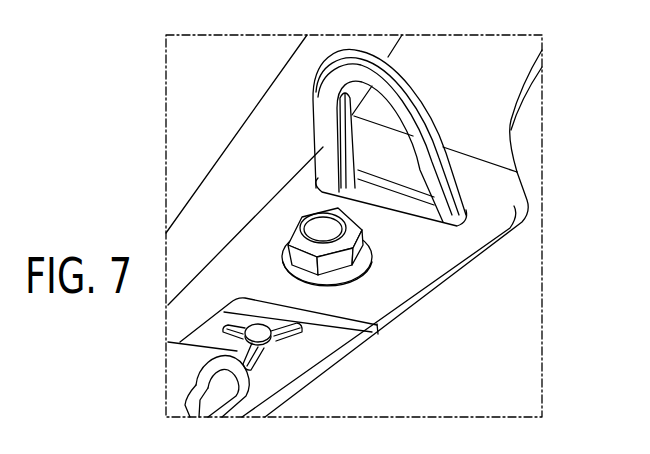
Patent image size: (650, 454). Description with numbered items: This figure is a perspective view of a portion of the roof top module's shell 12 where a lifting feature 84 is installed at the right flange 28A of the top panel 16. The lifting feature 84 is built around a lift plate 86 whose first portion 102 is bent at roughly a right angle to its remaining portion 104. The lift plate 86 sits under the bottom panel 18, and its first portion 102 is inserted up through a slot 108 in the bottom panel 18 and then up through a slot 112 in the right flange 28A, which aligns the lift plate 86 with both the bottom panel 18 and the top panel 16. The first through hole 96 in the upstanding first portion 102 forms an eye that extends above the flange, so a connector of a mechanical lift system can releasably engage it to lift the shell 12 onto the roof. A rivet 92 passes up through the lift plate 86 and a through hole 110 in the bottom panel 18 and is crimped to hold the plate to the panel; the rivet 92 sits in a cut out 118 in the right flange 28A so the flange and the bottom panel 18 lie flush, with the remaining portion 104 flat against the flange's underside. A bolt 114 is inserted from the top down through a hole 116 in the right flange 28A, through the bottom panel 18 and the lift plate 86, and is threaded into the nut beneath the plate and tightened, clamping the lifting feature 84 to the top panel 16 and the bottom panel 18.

The shell 12 is at (163, 150).
The top panel 16 is at (293, 88).
The bottom panel 18 is at (378, 326).
The right flange 28A is at (509, 198).
The lifting feature 84 is at (503, 371).
The lift plate 86 is at (317, 386).
The rivet 92 is at (243, 296).
The first through hole 96 is at (378, 133).
The first portion 102 is at (430, 77).
The remaining portion 104 is at (334, 377).
The slot 108 is at (404, 200).
The through hole 110 is at (274, 354).
The slot 112 is at (402, 182).
The bolt 114 is at (318, 228).
The hole 116 is at (372, 277).
The cut out 118 is at (253, 296).